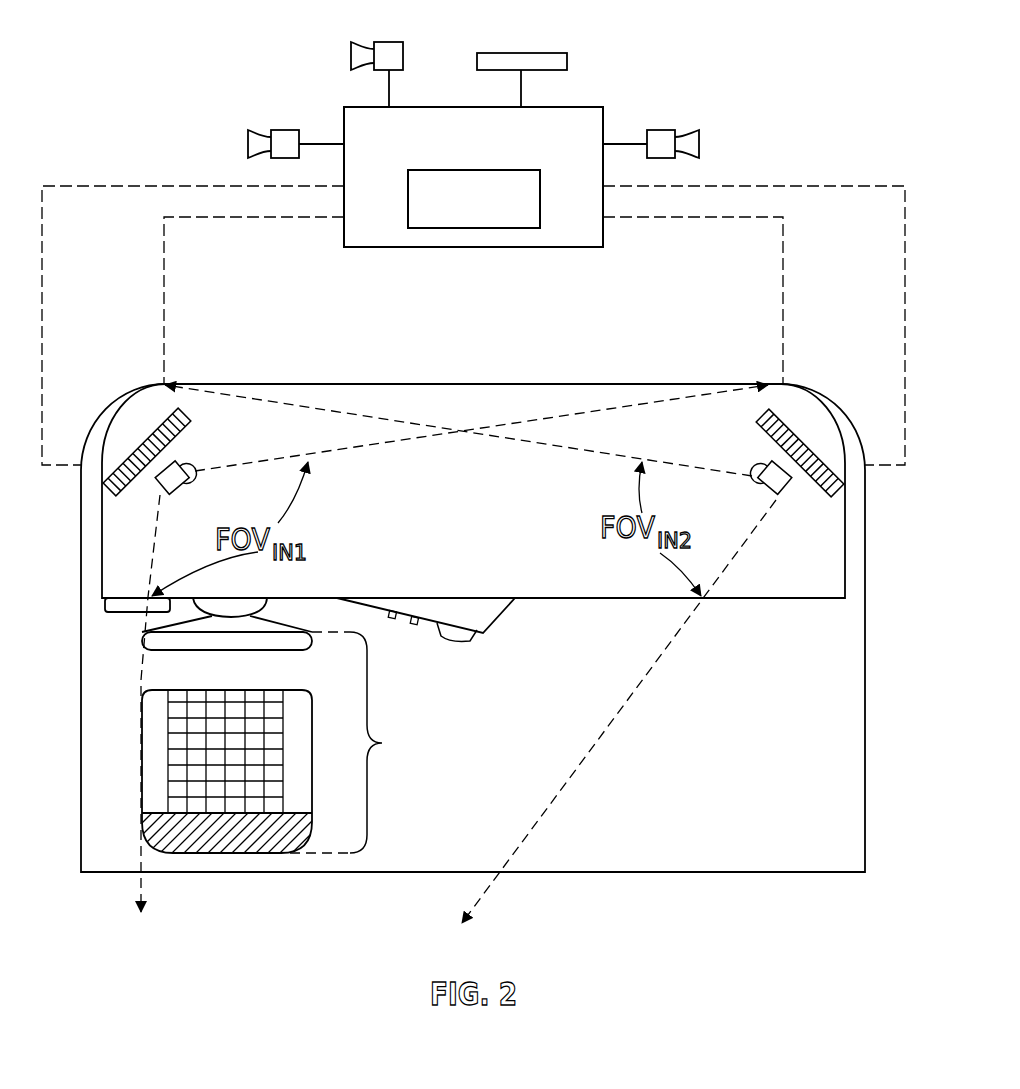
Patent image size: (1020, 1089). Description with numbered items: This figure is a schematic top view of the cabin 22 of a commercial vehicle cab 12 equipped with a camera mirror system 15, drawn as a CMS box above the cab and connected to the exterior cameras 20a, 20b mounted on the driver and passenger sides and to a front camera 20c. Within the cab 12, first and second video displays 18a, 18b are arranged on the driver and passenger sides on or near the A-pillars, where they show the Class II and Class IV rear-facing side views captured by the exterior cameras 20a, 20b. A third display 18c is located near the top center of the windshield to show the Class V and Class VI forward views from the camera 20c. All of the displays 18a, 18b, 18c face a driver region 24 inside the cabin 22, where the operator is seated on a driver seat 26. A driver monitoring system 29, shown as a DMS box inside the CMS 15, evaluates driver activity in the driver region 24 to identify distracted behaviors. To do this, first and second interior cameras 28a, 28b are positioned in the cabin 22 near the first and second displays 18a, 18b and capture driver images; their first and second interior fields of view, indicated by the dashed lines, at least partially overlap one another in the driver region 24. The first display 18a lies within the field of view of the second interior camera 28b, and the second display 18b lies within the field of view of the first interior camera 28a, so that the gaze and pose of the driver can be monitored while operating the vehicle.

The vehicle cab 12 is at (620, 352).
The camera mirror system 15 is at (604, 126).
The first video display 18a is at (144, 434).
The second video display 18b is at (801, 432).
The third display 18c is at (522, 53).
The exterior camera 20a is at (285, 130).
The exterior camera 20b is at (662, 130).
The camera 20c is at (388, 42).
The cabin 22 is at (782, 749).
The driver region 24 is at (279, 725).
The driver seat 26 is at (298, 720).
The first interior camera 28a is at (197, 452).
The second interior camera 28b is at (763, 462).
The driver monitoring system 29 is at (472, 229).